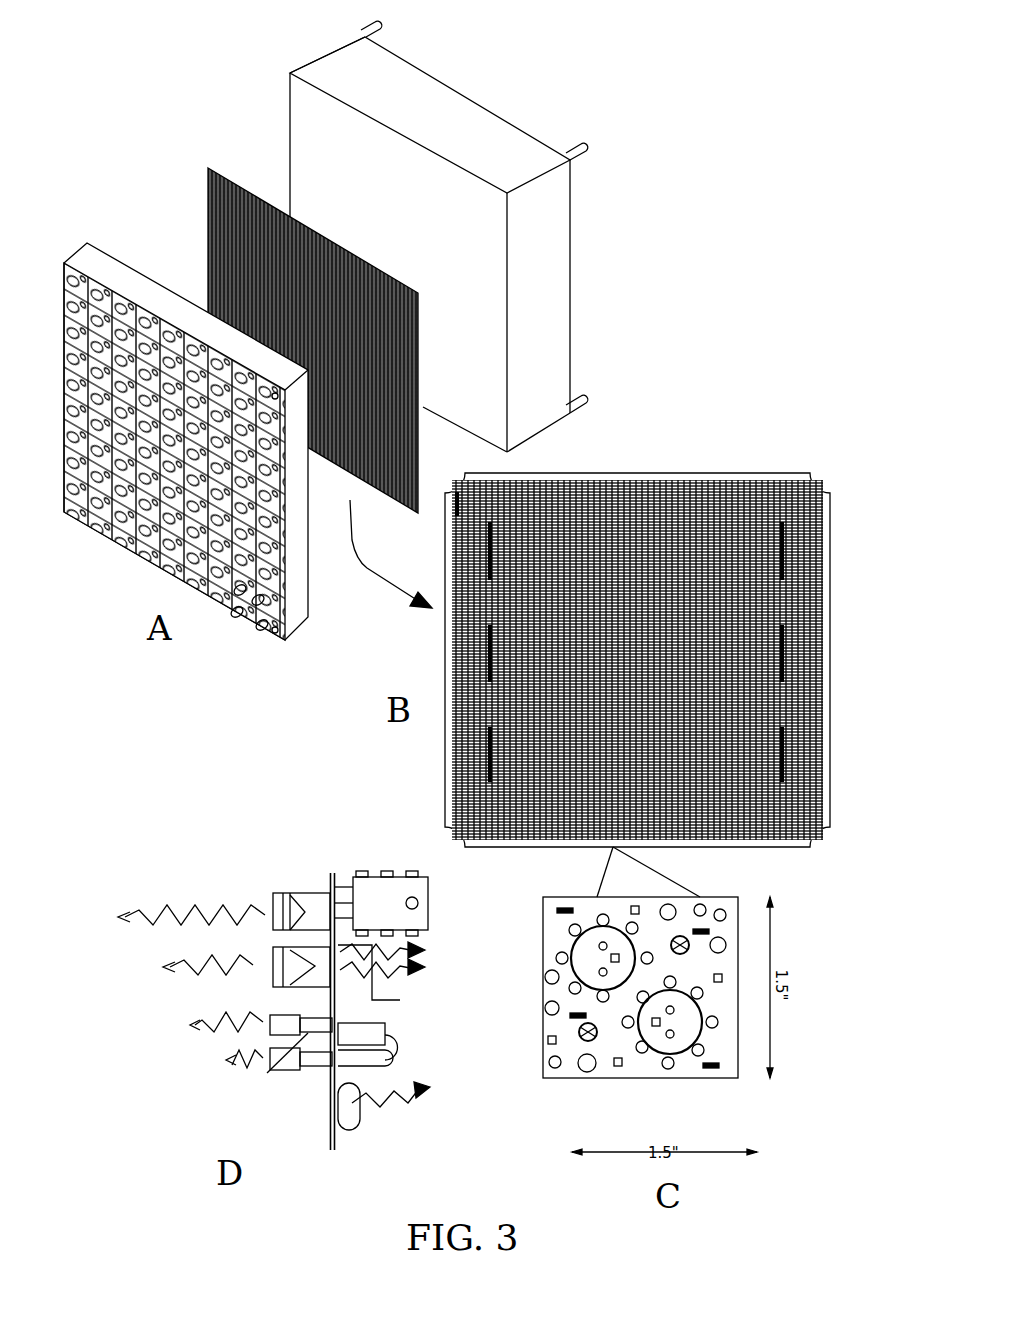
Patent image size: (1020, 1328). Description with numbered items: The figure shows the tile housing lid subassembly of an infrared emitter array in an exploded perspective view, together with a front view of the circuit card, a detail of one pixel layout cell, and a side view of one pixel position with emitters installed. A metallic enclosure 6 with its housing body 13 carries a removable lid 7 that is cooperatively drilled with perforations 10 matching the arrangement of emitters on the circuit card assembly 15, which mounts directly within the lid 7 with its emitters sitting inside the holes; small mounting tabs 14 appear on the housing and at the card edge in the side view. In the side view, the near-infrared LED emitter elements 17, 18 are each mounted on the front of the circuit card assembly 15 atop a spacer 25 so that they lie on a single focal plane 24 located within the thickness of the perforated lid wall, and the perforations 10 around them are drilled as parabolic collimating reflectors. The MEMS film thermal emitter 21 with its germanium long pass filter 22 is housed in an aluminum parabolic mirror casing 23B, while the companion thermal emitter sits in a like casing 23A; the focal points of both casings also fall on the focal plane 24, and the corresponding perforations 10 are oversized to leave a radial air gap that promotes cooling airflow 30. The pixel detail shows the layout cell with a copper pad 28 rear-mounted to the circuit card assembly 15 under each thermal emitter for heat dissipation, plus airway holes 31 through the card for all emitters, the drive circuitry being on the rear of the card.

In FIG. 3A, the enclosure 6 is at (289, 72).
In FIG. 3A, the lid 7 is at (65, 262).
In FIG. 3A, the perforations 10 is at (238, 594).
In FIG. 3A, the housing 13 is at (547, 322).
In FIG. 3A, the printed circuit board 14 is at (375, 27).
In FIG. 3D, the printed circuit board 14 is at (314, 905).
In FIG. 3A, the circuit card assembly 15 is at (233, 166).
In FIG. 3B, the circuit card assembly 15 is at (690, 470).
In FIG. 3D, the LED emitter element 17 is at (290, 1060).
In FIG. 3D, the LED emitter element 18 is at (273, 1013).
In FIG. 3D, the MEMS film thermal emitter 21 is at (328, 938).
In FIG. 3D, the germanium long pass filter 22 is at (292, 949).
In FIG. 3D, the parabolic mirror casing 23A is at (307, 895).
In FIG. 3D, the parabolic mirror casing 23B is at (312, 990).
In FIG. 3D, the focal plane 24 is at (290, 885).
In FIG. 3D, the spacer 25 is at (267, 1073).
In FIG. 3C, the copper pad 28 is at (600, 920).
In FIG. 3D, the cooling airflow 30 is at (218, 1127).
In FIG. 3C, the airway holes 31 is at (575, 930).